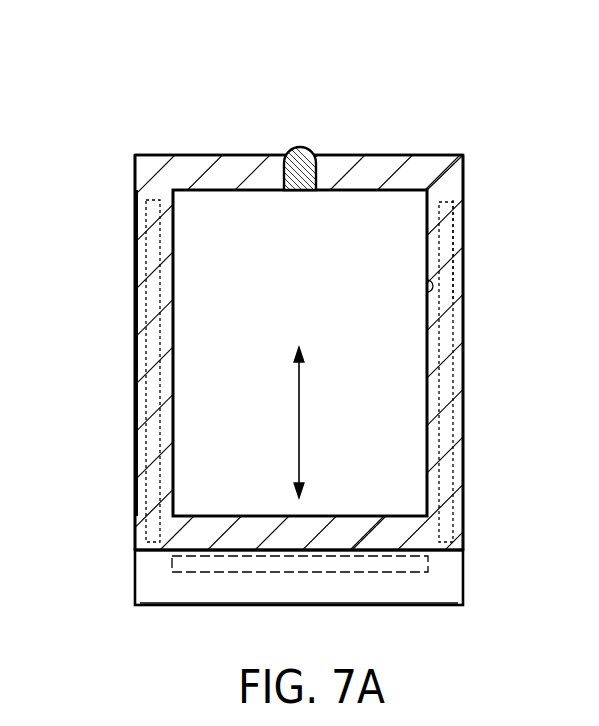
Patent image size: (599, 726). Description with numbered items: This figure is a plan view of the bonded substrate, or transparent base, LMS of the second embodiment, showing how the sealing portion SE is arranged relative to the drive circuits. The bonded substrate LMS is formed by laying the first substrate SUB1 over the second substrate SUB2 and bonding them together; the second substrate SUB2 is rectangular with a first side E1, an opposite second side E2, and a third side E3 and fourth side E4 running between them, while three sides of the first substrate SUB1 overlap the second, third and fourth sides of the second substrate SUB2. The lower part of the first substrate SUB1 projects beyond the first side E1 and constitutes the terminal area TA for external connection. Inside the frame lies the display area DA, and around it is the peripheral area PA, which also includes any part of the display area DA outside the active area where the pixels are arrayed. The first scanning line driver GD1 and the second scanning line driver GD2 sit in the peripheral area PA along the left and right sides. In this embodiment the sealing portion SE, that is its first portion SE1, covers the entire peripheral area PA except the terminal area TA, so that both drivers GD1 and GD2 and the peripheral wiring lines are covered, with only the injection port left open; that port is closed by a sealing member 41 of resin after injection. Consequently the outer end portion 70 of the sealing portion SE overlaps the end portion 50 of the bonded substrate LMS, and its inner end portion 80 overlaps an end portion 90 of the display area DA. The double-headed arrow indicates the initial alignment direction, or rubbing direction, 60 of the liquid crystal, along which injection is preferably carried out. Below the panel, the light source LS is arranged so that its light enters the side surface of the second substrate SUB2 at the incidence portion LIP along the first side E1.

The peripheral area PA is at (158, 177).
The display area DA is at (198, 228).
The first scanning line driver GD1 is at (134, 292).
The second scanning line driver GD2 is at (460, 271).
The bonded substrate (transparent base) LMS is at (136, 383).
The end portion of the bonded substrate 50 is at (134, 413).
The first side E1 is at (458, 556).
The second side E2 is at (396, 170).
The third side E3 is at (134, 443).
The fourth side E4 is at (465, 436).
The first substrate SUB1 is at (134, 592).
The second substrate SUB2 is at (153, 551).
The sealing member 41 is at (302, 148).
The sealing portion SE is at (452, 171).
The first portion SE1 is at (465, 190).
The outer end portion 70 is at (464, 208).
The inner end portion 80 is at (426, 215).
The end portion of the display area 90 is at (426, 293).
The initial alignment direction (rubbing direction) 60 is at (298, 457).
The incidence portion LIP is at (372, 535).
The light source LS is at (429, 571).
The terminal area TA is at (400, 584).